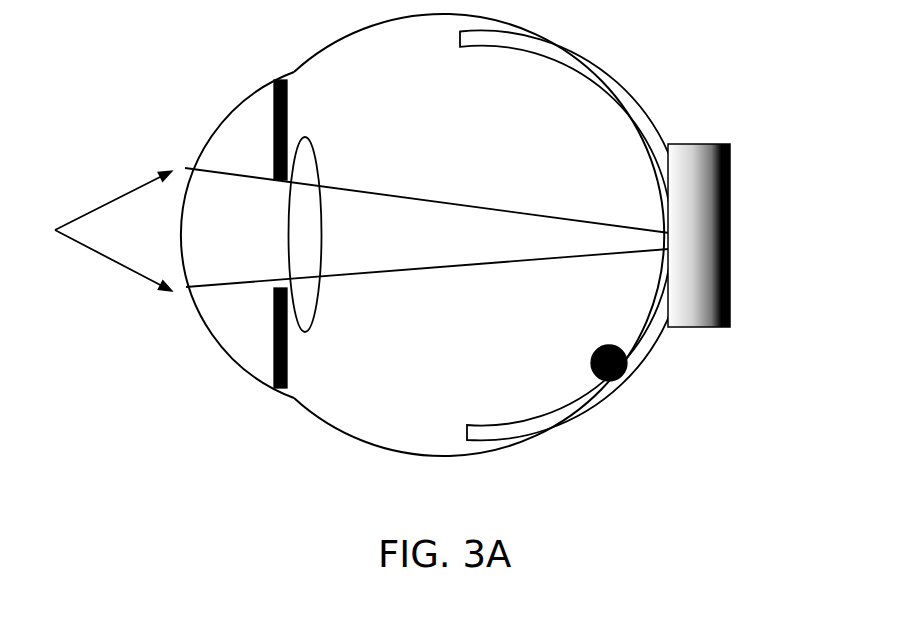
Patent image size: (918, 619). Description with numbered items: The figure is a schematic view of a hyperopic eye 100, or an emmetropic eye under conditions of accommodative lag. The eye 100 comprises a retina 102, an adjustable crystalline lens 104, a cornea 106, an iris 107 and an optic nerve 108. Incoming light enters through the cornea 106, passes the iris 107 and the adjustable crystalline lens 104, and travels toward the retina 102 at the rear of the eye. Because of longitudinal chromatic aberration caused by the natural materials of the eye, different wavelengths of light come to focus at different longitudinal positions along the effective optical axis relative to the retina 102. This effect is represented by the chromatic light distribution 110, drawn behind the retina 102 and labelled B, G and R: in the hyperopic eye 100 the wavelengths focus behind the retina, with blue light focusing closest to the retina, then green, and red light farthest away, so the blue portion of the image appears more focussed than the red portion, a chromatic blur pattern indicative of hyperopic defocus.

The hyperopic eye 100 is at (185, 51).
The retina 102 is at (582, 98).
The adjustable crystalline lens 104 is at (315, 307).
The cornea 106 is at (210, 353).
The iris 107 is at (288, 128).
The optic nerve 108 is at (592, 357).
The chromatic light distribution 110 is at (693, 143).